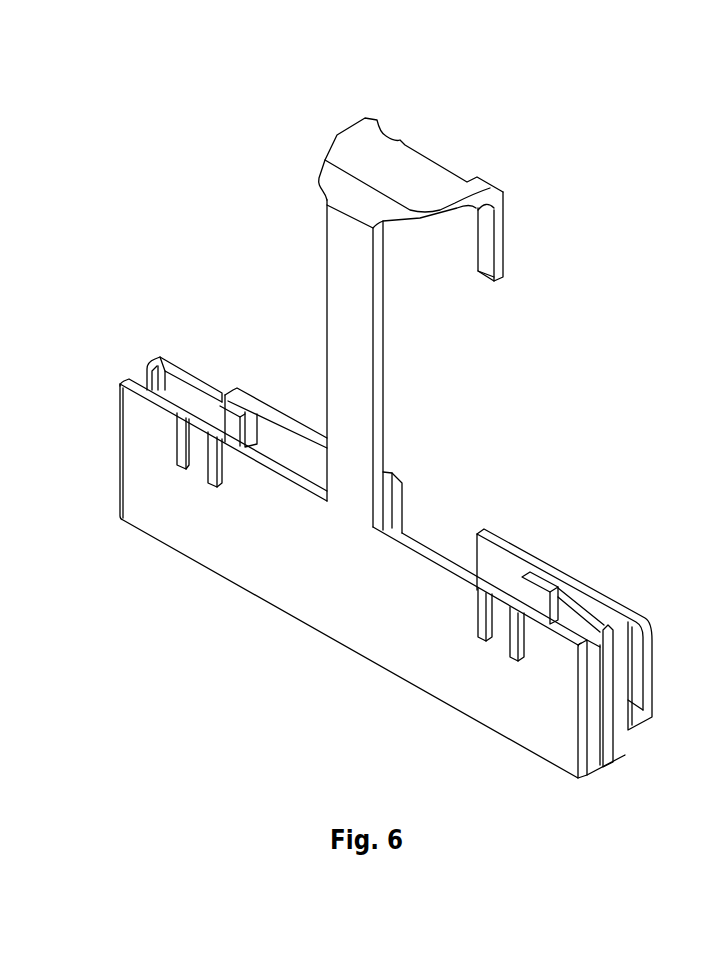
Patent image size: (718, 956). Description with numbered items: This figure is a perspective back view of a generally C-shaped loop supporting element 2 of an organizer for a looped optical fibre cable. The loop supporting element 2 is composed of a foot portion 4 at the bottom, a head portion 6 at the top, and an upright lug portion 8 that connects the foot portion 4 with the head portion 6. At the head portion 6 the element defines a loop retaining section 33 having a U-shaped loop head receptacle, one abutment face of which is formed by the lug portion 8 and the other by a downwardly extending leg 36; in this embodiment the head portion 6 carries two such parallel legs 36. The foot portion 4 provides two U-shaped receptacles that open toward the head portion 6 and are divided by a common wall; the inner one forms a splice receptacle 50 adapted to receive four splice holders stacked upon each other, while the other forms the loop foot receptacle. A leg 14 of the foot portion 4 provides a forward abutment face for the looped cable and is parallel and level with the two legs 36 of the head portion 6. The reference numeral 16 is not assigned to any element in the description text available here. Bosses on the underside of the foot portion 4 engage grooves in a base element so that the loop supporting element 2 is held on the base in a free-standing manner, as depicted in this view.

The C-shaped loop supporting element 2 is at (366, 406).
The foot portion 4 is at (104, 465).
The head portion 6 is at (442, 178).
The lug portion 8 is at (318, 317).
The leg 14 is at (648, 622).
The upper frame 16 is at (518, 568).
The loop retaining section 33 is at (437, 250).
The downwardly extending leg 36 is at (488, 240).
The splice receptacle 50 is at (584, 612).